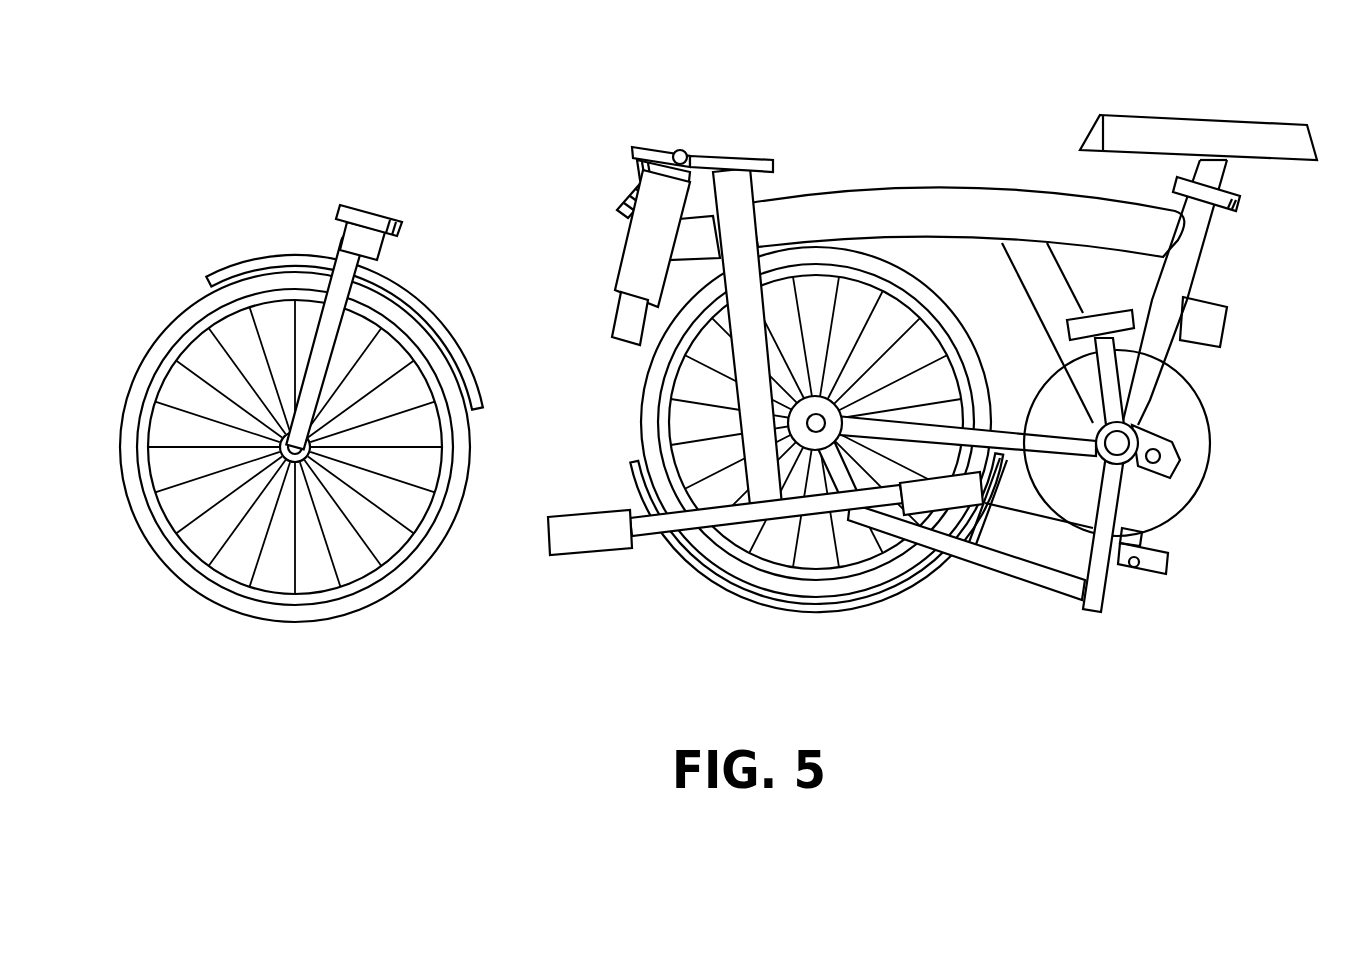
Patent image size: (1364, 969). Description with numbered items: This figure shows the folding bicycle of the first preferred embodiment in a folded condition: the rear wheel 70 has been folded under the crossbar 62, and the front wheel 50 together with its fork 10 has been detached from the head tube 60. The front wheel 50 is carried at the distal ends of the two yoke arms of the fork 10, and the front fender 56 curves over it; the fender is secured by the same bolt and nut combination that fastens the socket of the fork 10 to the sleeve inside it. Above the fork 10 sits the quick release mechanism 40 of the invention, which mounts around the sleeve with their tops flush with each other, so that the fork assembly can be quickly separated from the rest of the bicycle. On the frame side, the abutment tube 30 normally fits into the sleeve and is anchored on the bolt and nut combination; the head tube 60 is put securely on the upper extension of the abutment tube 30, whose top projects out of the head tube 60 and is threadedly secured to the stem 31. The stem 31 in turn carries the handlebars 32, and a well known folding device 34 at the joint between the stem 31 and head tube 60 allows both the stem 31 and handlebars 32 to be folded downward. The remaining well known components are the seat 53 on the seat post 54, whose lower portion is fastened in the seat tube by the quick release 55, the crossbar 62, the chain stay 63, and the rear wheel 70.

The fork 10 is at (335, 250).
The abutment tube 30 is at (620, 314).
The stem 31 is at (742, 178).
The handlebars 32 is at (578, 517).
The folding device 34 is at (632, 148).
The quick release mechanism 40 is at (340, 205).
The front wheel 50 is at (150, 342).
The seat 53 is at (1256, 126).
The seat post 54 is at (1240, 178).
The quick release 55 is at (1240, 206).
The front fender 56 is at (415, 292).
The head tube 60 is at (625, 253).
The crossbar 62 is at (1005, 210).
The chain stay 63 is at (1048, 588).
The rear wheel 70 is at (715, 565).